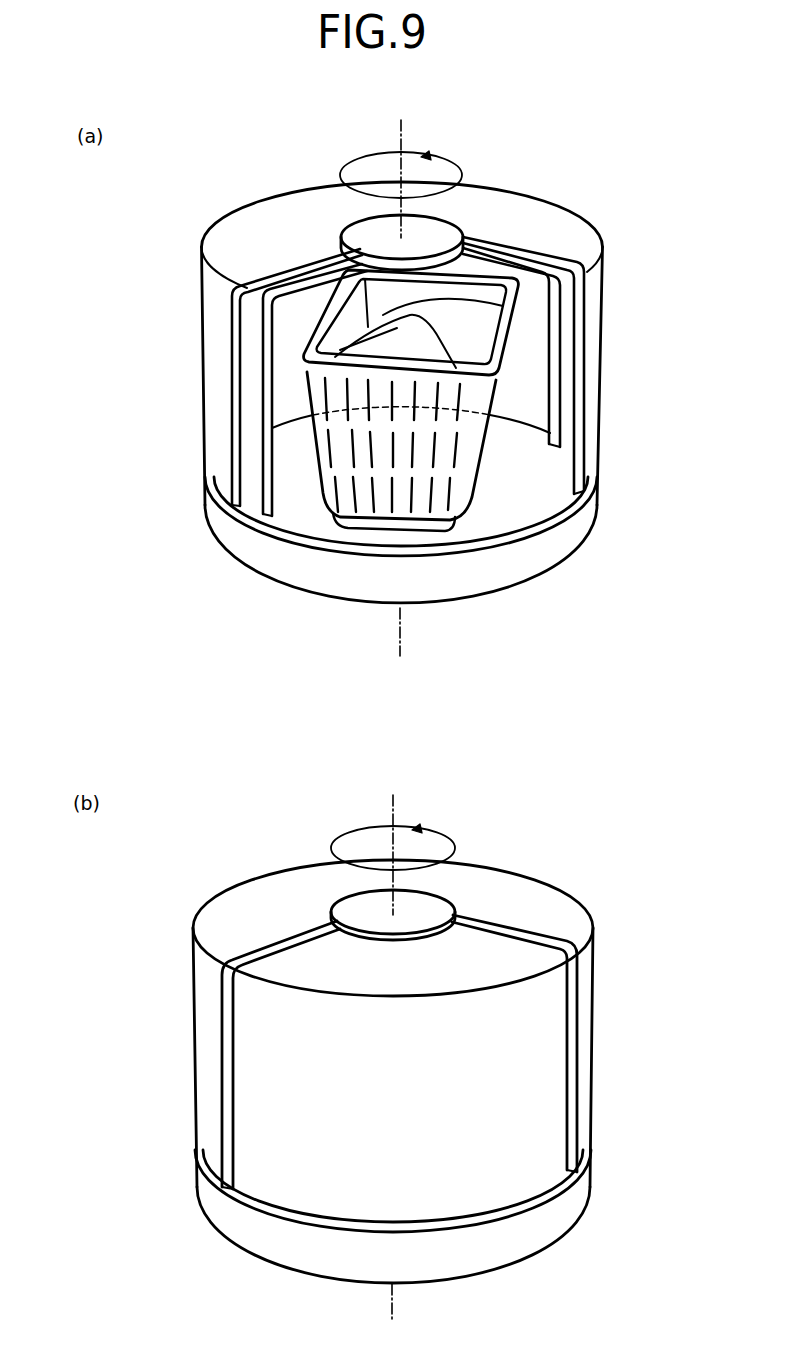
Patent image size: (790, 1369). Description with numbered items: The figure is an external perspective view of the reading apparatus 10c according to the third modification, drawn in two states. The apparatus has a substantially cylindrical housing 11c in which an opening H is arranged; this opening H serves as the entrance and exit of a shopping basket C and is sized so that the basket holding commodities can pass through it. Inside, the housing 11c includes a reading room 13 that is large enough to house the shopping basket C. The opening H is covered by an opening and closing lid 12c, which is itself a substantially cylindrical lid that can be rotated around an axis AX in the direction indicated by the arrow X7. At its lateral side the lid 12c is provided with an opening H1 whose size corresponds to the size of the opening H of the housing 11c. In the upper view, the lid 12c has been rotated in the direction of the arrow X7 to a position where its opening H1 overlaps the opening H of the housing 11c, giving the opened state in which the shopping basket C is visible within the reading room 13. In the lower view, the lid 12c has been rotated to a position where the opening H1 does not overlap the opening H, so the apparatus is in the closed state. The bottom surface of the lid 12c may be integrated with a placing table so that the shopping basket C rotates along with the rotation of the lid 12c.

The reading apparatus 10c is at (630, 205).
The housing 11c is at (212, 320).
The opening and closing lid 12c is at (251, 387).
The reading room 13 is at (523, 353).
The opening H is at (250, 427).
The opening H1 is at (285, 459).
The shopping basket C is at (453, 510).
The axis AX is at (394, 710).
The arrow X7 is at (397, 503).